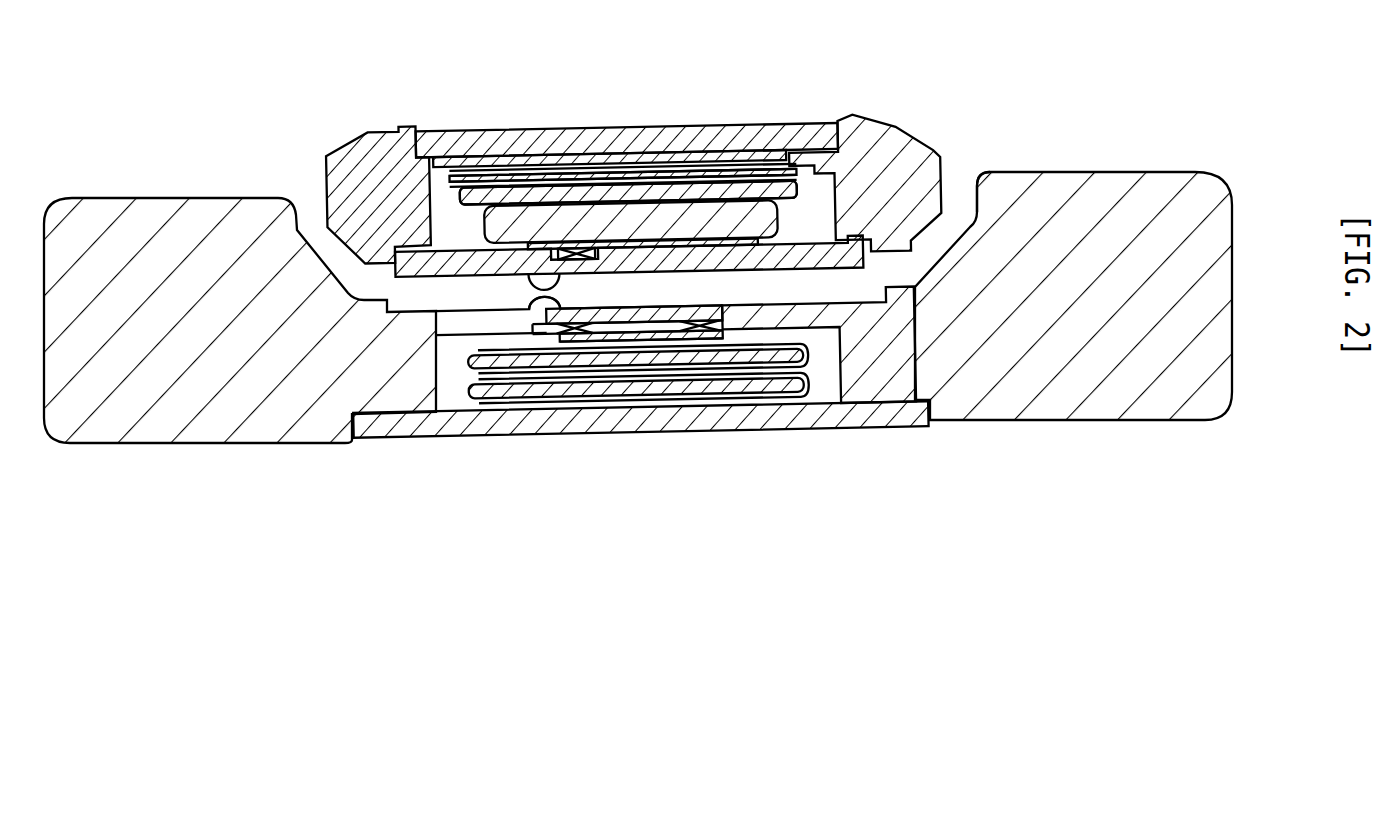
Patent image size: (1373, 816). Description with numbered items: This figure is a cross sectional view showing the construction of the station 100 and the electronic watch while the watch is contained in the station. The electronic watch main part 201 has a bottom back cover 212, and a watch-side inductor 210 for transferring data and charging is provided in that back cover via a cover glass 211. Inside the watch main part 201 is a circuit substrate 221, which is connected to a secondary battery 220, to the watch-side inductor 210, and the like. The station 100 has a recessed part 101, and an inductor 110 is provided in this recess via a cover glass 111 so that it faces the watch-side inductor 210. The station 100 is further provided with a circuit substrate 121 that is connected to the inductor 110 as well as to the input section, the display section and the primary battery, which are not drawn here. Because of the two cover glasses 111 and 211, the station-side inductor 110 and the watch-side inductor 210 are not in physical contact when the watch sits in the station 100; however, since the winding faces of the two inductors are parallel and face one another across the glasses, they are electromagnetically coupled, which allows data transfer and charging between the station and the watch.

The station 100 is at (307, 420).
The recessed part 101 is at (968, 225).
The inductor 110 is at (725, 325).
The cover glass 111 is at (545, 298).
The circuit substrate 121 is at (800, 382).
The electronic watch main part 201 is at (940, 165).
The watch-side inductor 210 is at (793, 248).
The cover glass 211 is at (530, 270).
The bottom back cover 212 is at (391, 258).
The secondary battery 220 is at (669, 210).
The circuit substrate 221 is at (777, 177).